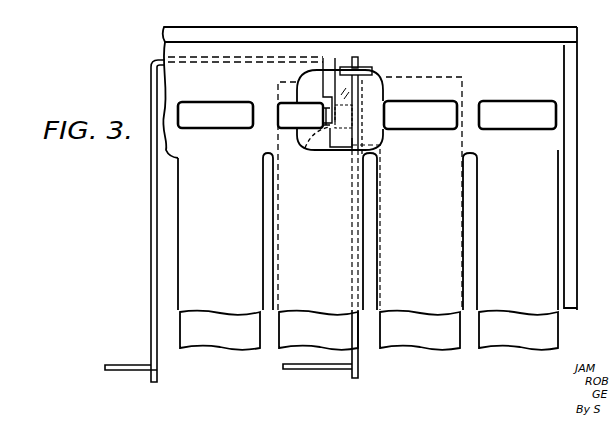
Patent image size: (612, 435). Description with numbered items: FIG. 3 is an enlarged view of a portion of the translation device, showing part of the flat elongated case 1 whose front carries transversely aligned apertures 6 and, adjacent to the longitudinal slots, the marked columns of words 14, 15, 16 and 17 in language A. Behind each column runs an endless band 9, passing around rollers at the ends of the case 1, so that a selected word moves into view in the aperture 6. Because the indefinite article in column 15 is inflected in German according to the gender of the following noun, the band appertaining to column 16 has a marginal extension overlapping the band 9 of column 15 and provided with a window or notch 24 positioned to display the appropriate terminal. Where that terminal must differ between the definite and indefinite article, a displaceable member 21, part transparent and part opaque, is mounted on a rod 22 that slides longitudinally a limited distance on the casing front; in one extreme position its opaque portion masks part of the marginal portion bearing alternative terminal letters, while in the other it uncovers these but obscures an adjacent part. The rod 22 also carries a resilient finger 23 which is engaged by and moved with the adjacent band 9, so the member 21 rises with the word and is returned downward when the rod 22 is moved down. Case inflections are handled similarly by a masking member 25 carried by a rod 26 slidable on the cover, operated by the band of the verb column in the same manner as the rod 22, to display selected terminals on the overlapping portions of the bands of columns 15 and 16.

The case 1 is at (578, 234).
The apertures 6 is at (553, 118).
The endless band 9 is at (205, 327).
The column of words 14 is at (228, 273).
The column of words 15 is at (326, 273).
The column of words 16 is at (423, 273).
The column of words 17 is at (525, 273).
The displaceable member 21 is at (336, 88).
The rod 22 is at (361, 53).
The resilient finger 23 is at (298, 366).
The window or notch 24 is at (312, 143).
The masking member 25 is at (322, 98).
The rod 26 is at (252, 57).